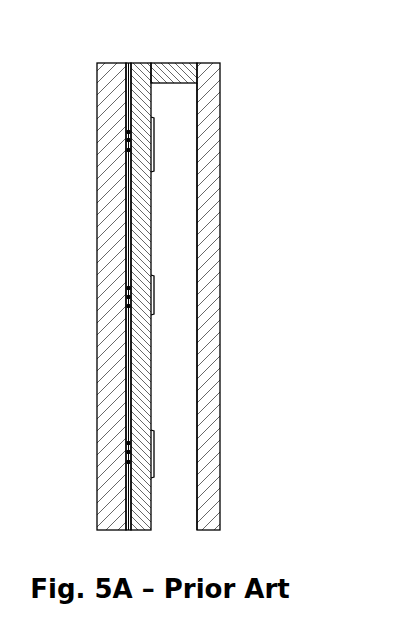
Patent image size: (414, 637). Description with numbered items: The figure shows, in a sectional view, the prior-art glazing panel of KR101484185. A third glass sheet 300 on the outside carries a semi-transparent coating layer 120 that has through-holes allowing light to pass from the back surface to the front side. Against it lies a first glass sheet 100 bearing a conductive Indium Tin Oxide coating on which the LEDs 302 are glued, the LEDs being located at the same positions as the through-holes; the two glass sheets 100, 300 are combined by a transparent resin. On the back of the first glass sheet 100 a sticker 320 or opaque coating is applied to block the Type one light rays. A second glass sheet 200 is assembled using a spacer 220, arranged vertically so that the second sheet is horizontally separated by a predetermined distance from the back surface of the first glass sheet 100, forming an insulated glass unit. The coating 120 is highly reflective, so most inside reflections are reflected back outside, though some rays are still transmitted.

The third glass sheet 300 is at (113, 62).
The first glass sheet 100 is at (141, 60).
The spacer 220 is at (191, 62).
The LEDs 302 is at (128, 298).
The sticker 320 is at (154, 297).
The semi-transparent coating layer 120 is at (127, 365).
The second glass sheet 200 is at (222, 375).